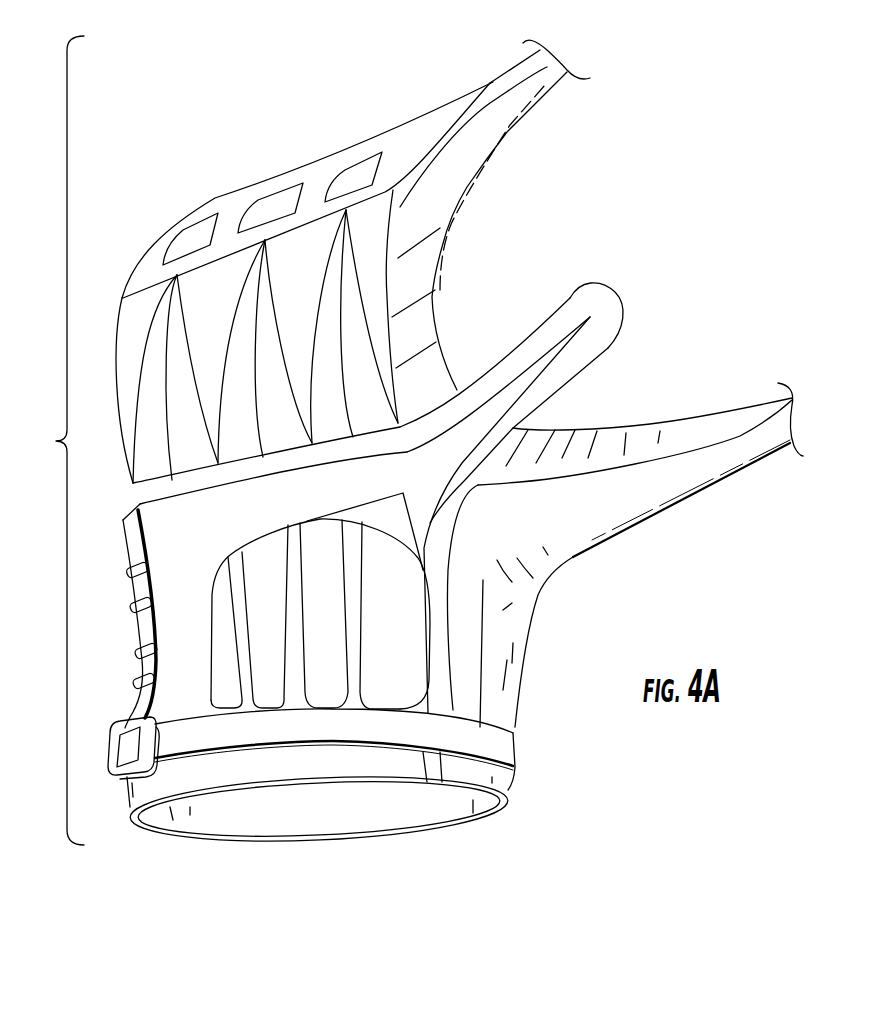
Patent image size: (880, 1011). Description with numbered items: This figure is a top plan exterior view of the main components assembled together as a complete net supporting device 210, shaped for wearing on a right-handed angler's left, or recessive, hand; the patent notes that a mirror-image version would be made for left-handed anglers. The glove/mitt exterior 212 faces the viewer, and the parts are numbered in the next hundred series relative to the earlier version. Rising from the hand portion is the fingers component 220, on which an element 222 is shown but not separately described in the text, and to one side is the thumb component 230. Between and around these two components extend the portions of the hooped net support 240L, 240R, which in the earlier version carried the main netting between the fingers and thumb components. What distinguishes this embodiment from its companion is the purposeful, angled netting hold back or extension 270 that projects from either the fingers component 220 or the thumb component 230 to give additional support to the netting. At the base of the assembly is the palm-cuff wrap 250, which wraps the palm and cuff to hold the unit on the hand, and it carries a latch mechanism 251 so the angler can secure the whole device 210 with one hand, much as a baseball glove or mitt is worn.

The assembled net supporting device 210 is at (53, 440).
The glove/mitt exterior 212 is at (307, 507).
The fingers component 220 is at (113, 365).
The strap openings 222 is at (222, 196).
The thumb component 230 is at (572, 526).
The hooped net support 240L is at (520, 63).
The hooped net support 240R is at (757, 423).
The palm-cuff wrap 250 is at (507, 789).
The latch mechanism 251 is at (112, 747).
The netting hold back or extension 270 is at (535, 338).